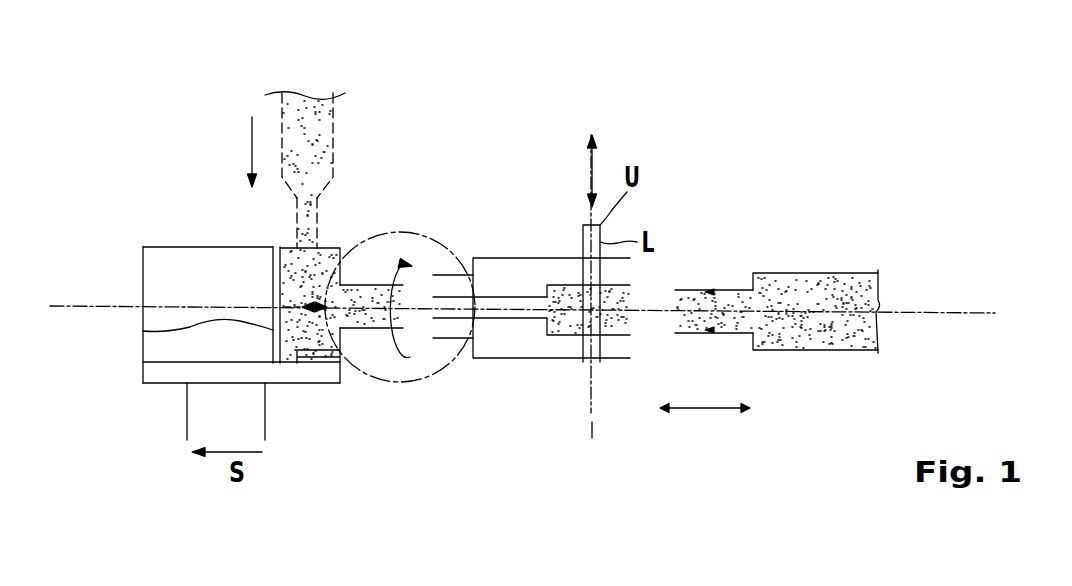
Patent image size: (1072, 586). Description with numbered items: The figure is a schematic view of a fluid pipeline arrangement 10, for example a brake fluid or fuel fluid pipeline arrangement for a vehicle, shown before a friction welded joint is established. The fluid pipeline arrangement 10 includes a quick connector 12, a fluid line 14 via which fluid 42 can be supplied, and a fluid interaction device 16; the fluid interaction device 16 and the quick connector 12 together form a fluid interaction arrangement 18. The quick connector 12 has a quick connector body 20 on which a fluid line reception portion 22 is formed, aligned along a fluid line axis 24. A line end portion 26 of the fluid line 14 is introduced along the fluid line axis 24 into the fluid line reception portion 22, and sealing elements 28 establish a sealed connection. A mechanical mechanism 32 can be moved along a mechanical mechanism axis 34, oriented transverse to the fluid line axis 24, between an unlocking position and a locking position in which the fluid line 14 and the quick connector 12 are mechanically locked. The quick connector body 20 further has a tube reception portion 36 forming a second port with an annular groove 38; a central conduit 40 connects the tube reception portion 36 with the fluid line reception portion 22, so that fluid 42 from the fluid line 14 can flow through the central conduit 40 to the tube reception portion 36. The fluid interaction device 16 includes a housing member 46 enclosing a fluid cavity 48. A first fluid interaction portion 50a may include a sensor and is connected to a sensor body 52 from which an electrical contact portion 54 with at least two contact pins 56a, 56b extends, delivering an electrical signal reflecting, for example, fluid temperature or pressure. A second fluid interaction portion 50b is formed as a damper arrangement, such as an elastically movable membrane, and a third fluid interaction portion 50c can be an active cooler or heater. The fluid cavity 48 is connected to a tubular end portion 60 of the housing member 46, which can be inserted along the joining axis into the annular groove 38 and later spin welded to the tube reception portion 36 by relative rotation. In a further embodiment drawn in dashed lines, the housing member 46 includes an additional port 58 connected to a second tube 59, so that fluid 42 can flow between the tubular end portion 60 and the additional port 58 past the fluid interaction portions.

The fluid pipeline arrangement 10 is at (795, 152).
The quick connector 12 is at (540, 210).
The fluid line 14 is at (860, 248).
The fluid interaction device 16 is at (163, 215).
The fluid interaction arrangement 18 is at (580, 106).
The quick connector body 20 is at (493, 272).
The fluid line reception portion 22 is at (652, 285).
The fluid line axis 24 is at (655, 313).
The line end portion 26 is at (745, 337).
The sealing elements 28 is at (572, 350).
The mechanical mechanism 32 is at (583, 240).
The mechanical mechanism axis 34 is at (592, 430).
The tube reception portion 36 is at (445, 362).
The annular groove 38 is at (447, 273).
The central conduit 40 is at (524, 335).
The fluid 42 is at (878, 333).
The housing member 46 is at (143, 273).
The fluid cavity 48 is at (273, 276).
The first fluid interaction portion 50a is at (305, 375).
The second fluid interaction portion 50b is at (143, 331).
The third fluid interaction portion 50c is at (333, 383).
The sensor body 52 is at (157, 373).
The electrical contact portion 54 is at (142, 425).
The contact pin 56a is at (187, 420).
The contact pin 56b is at (265, 420).
The additional port 58 is at (300, 217).
The second tube 59 is at (333, 118).
The tubular end portion 60 is at (348, 265).